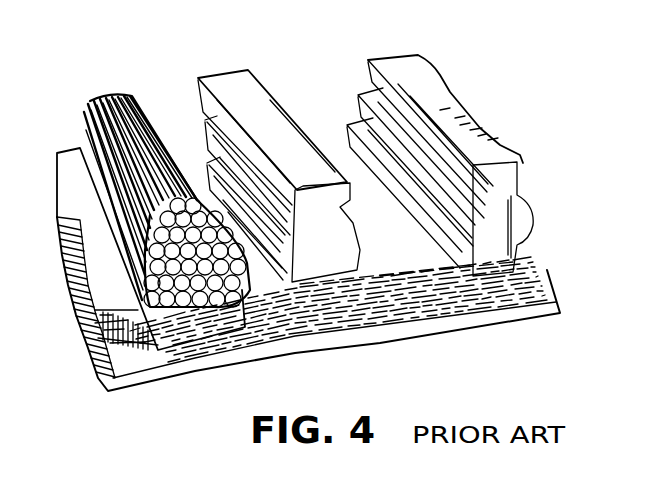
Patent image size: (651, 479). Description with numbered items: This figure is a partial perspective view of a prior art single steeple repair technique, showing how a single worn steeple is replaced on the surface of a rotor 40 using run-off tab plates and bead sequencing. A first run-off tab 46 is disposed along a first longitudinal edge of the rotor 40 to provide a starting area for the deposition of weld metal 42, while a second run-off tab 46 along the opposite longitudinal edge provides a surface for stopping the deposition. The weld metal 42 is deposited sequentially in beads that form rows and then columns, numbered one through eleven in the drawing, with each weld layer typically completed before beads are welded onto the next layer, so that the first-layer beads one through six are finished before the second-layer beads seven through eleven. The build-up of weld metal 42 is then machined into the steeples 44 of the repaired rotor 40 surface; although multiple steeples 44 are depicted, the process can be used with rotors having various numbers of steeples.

The rotor 40 is at (523, 274).
The weld metal 42 is at (117, 97).
The steeples 44 is at (245, 77).
The run-off tab 46 is at (66, 156).